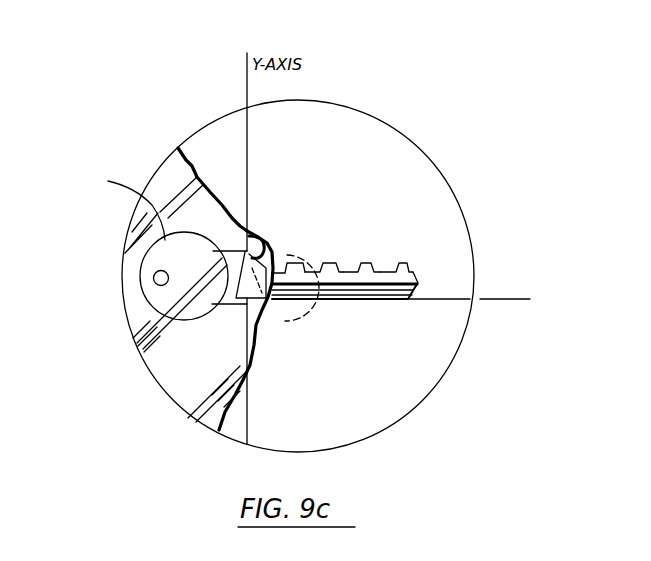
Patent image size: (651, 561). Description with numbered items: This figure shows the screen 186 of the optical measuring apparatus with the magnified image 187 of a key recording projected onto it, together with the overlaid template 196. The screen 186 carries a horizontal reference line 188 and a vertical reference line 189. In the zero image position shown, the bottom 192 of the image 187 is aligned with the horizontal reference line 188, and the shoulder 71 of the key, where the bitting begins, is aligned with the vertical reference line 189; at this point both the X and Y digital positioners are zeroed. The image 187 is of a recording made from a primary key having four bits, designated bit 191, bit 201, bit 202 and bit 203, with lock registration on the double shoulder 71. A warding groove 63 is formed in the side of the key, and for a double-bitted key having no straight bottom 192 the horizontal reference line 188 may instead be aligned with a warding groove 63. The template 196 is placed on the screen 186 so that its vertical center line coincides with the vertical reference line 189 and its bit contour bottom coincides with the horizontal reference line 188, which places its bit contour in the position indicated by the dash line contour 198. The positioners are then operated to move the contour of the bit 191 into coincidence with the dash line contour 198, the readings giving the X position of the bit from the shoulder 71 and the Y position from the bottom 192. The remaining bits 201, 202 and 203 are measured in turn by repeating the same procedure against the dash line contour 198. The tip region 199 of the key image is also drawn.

The warding groove 63 is at (397, 299).
The shoulder 71 is at (256, 242).
The screen 186 is at (402, 150).
The magnified image 187 is at (117, 207).
The horizontal reference line 188 is at (508, 299).
The vertical reference line 189 is at (246, 138).
The bit 191 is at (283, 321).
The bottom of bitting 192 is at (345, 300).
The template 196 is at (186, 387).
The dash line contour 198 is at (210, 313).
The key tip 199 is at (418, 283).
The bit 201 is at (314, 262).
The bit 202 is at (350, 262).
The bit 203 is at (388, 272).